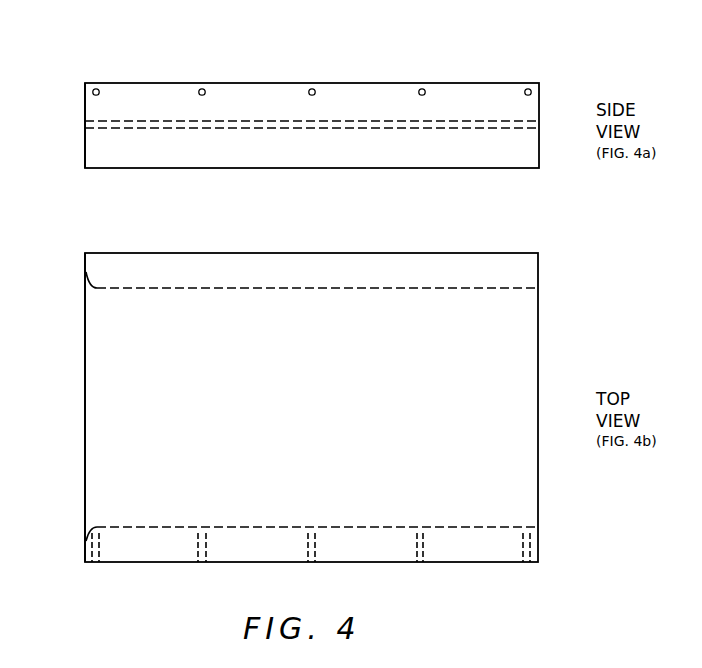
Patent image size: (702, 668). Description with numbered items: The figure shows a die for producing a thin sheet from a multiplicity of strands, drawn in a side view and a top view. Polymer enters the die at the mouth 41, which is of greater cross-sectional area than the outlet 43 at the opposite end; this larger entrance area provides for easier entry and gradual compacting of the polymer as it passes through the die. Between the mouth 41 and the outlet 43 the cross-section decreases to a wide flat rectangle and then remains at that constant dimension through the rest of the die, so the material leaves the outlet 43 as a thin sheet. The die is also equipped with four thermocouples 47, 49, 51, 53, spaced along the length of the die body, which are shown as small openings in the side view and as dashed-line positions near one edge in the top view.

In FIG. 4a, the mouth 41 is at (85, 124).
In FIG. 4b, the mouth 41 is at (85, 419).
In FIG. 4a, the outlet 43 is at (539, 127).
In FIG. 4b, the outlet 43 is at (538, 396).
In FIG. 4a, the thermocouple 47 is at (96, 83).
In FIG. 4b, the thermocouple 47 is at (100, 563).
In FIG. 4a, the thermocouple 49 is at (202, 83).
In FIG. 4b, the thermocouple 49 is at (206, 563).
In FIG. 4a, the thermocouple 51 is at (312, 83).
In FIG. 4b, the thermocouple 51 is at (315, 563).
In FIG. 4a, the thermocouple 53 is at (528, 83).
In FIG. 4b, the thermocouple 53 is at (527, 563).